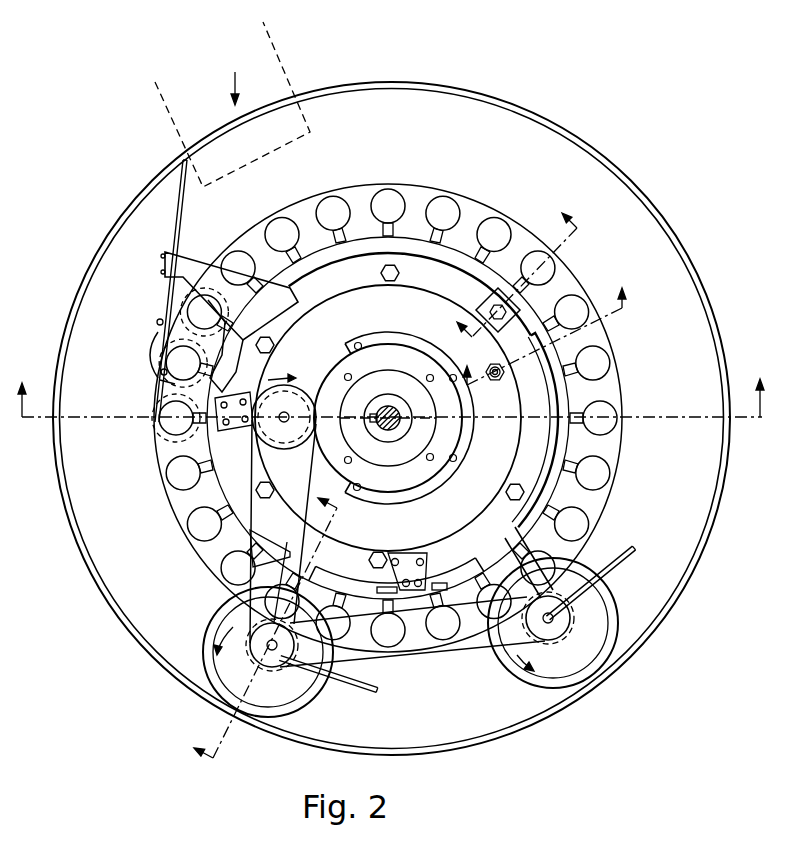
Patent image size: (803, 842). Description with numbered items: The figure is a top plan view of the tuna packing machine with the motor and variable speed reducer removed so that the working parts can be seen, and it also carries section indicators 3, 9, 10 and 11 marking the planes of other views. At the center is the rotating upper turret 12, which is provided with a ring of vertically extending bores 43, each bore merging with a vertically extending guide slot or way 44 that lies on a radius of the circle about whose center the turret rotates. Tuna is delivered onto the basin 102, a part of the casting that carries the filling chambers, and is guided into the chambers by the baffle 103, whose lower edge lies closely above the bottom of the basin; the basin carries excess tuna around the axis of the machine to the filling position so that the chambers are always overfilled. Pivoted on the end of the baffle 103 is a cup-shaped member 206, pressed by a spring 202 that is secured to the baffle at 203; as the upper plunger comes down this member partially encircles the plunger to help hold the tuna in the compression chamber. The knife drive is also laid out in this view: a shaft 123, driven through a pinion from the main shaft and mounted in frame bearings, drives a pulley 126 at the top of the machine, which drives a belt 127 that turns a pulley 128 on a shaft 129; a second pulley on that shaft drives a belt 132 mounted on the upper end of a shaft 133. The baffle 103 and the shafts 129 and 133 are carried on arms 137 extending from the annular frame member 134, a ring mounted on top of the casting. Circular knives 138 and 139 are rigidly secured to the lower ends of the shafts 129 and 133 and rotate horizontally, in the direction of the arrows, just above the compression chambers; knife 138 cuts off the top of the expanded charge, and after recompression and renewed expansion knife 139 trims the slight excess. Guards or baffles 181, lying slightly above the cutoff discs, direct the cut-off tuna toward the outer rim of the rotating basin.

The section line 3- 3 is at (394, 390).
The section line 9- 9 is at (256, 620).
The section line 10- 10 is at (548, 327).
The section line 11- 11 is at (505, 267).
The upper turret 12 is at (624, 386).
The vertically extending bore 43 is at (614, 418).
The guide slot or way 44 is at (577, 465).
The basin 102 is at (374, 418).
The baffle 103 is at (182, 225).
The shaft 123 is at (281, 442).
The pulley 126 is at (293, 419).
The belt 127 is at (302, 545).
The pulley 128 is at (268, 652).
The shaft 129 is at (268, 648).
The belt 132 is at (426, 652).
The shaft 133 is at (560, 618).
The annular frame member 134 is at (478, 528).
The arms 137 is at (359, 437).
The knife 138 is at (267, 664).
The knife 139 is at (553, 623).
The guards or baffles 181 is at (624, 566).
The spring 202 is at (155, 355).
The spring securing point 203 is at (157, 322).
The cup-shaped member 206 is at (160, 374).